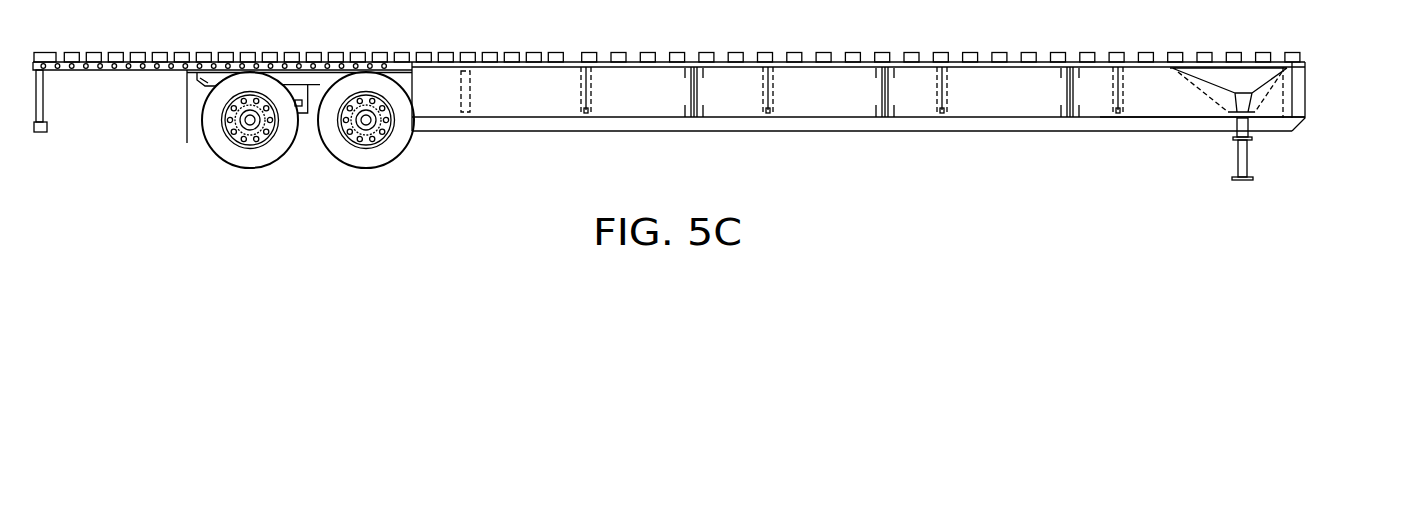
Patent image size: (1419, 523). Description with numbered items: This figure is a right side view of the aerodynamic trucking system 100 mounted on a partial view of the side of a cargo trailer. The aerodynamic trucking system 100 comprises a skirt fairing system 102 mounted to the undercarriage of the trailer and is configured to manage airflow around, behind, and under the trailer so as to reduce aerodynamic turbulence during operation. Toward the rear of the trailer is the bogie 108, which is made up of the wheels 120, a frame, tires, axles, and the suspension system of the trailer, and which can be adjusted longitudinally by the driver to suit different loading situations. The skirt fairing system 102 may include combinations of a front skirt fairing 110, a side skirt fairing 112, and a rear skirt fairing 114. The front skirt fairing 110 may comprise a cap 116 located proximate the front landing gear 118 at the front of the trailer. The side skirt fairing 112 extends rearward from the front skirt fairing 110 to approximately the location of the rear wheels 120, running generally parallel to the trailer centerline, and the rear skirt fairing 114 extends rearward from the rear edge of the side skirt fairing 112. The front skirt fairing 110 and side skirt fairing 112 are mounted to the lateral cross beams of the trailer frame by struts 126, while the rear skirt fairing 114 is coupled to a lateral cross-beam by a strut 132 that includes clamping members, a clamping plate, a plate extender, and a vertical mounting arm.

The aerodynamic trucking system 100 is at (1317, 99).
The skirt fairing system 102 is at (777, 152).
The bogie 108 is at (310, 130).
The front skirt fairing 110 is at (1162, 119).
The side skirt fairing 112 is at (713, 120).
The rear skirt fairing 114 is at (513, 119).
The cap 116 is at (1305, 80).
The front landing gear 118 is at (1251, 157).
The wheels 120 is at (363, 197).
The struts 126 is at (587, 93).
The strut 132 is at (470, 96).